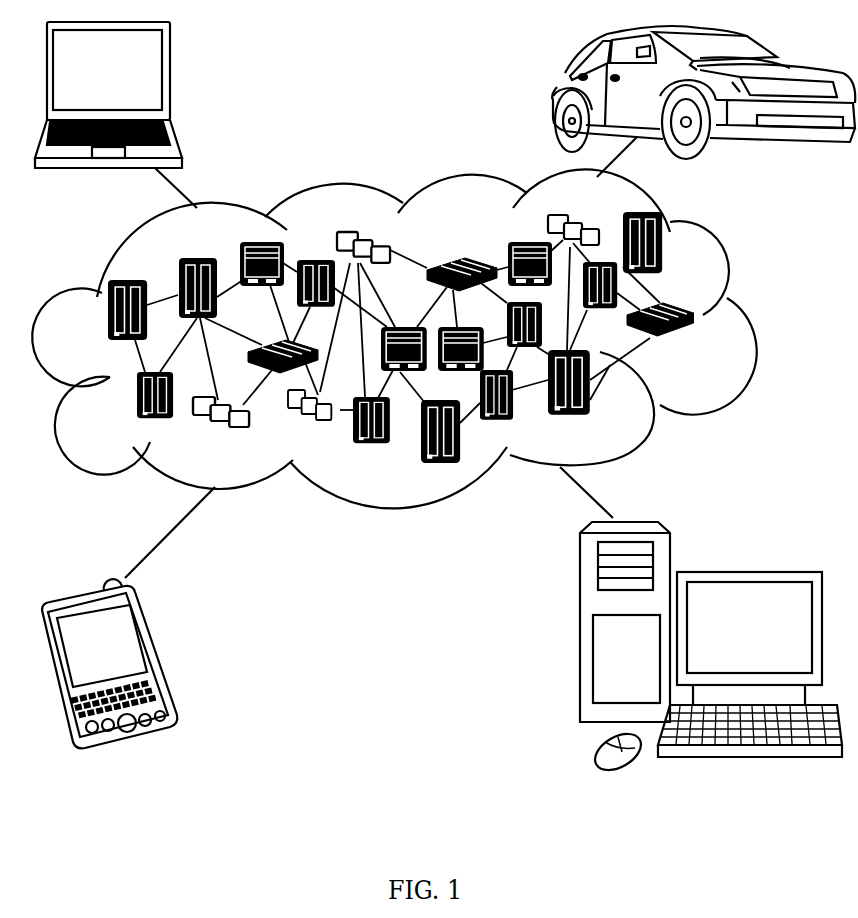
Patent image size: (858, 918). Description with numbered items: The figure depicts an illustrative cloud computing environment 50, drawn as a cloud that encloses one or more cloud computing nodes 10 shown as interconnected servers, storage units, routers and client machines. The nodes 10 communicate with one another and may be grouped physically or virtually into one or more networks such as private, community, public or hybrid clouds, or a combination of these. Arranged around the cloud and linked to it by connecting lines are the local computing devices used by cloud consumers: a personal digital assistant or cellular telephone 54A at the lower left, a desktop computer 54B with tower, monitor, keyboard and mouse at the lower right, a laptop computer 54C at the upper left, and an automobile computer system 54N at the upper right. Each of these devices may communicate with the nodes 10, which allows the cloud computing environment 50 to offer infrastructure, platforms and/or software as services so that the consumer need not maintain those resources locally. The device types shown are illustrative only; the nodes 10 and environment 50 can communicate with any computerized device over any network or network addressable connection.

The cloud computing nodes 10 is at (700, 346).
The cloud computing environment 50 is at (748, 323).
The personal digital assistant or cellular telephone 54A is at (160, 653).
The desktop computer 54B is at (748, 572).
The laptop computer 54C is at (170, 78).
The automobile computer system 54N is at (553, 97).